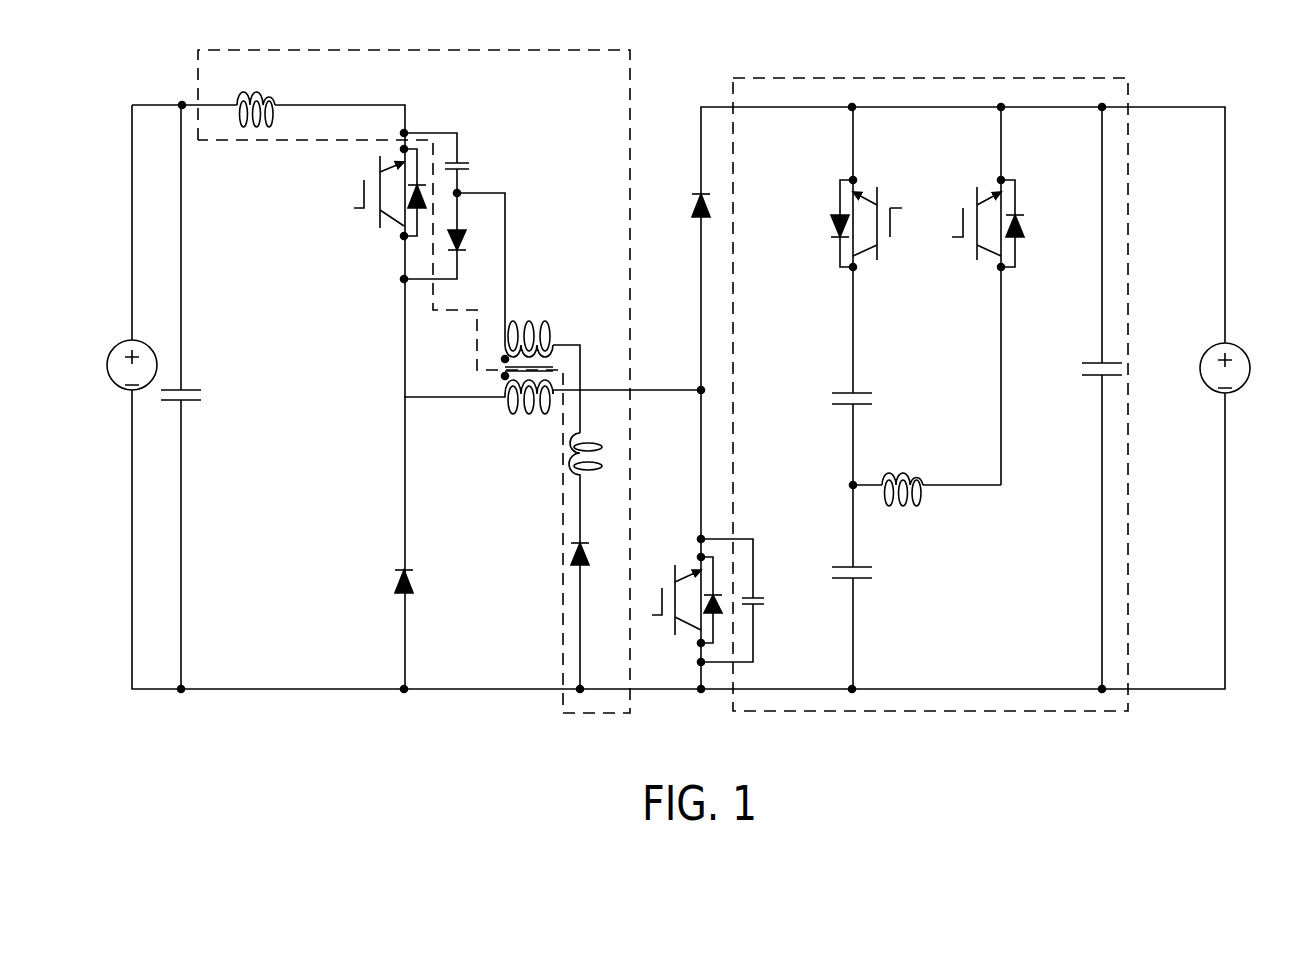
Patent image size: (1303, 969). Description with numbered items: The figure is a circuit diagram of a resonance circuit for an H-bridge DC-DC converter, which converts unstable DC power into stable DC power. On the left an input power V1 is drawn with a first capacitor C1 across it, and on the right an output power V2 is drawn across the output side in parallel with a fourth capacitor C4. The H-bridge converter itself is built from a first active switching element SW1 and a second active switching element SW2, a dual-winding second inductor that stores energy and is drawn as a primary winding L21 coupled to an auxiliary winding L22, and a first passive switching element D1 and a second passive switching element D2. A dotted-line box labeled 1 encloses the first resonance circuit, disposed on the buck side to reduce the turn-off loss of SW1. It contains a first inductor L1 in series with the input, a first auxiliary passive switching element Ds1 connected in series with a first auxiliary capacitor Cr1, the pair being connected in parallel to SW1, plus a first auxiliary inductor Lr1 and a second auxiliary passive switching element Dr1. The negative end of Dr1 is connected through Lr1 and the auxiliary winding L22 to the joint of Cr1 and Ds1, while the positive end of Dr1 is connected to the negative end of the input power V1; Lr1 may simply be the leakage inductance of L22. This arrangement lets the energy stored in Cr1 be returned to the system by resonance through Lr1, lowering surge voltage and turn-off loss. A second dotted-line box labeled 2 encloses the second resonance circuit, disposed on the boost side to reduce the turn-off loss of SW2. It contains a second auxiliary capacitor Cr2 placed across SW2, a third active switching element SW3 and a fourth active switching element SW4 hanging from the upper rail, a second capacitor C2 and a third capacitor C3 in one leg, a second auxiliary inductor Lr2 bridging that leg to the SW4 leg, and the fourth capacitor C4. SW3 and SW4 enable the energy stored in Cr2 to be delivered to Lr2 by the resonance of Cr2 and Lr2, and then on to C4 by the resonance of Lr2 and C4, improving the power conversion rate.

The first resonance circuit 1 is at (358, 50).
The second resonance circuit 2 is at (887, 78).
The input power V1 is at (117, 354).
The first capacitor C1 is at (202, 399).
The first inductor L1 is at (256, 89).
The first active switching element SW1 is at (385, 174).
The first auxiliary capacitor Cr1 is at (454, 162).
The first auxiliary passive switching element Ds1 is at (448, 240).
The auxiliary winding L22 is at (518, 313).
The primary winding L21 is at (552, 412).
The first auxiliary inductor Lr1 is at (594, 488).
The second auxiliary passive switching element Dr1 is at (594, 616).
The first passive switching element D1 is at (419, 596).
The second passive switching element D2 is at (674, 191).
The second active switching element SW2 is at (685, 580).
The second auxiliary capacitor Cr2 is at (755, 601).
The third active switching element SW3 is at (869, 206).
The fourth active switching element SW4 is at (988, 206).
The second capacitor C2 is at (873, 402).
The third capacitor C3 is at (873, 576).
The second auxiliary inductor Lr2 is at (926, 504).
The fourth capacitor C4 is at (1087, 383).
The output power V2 is at (1245, 368).